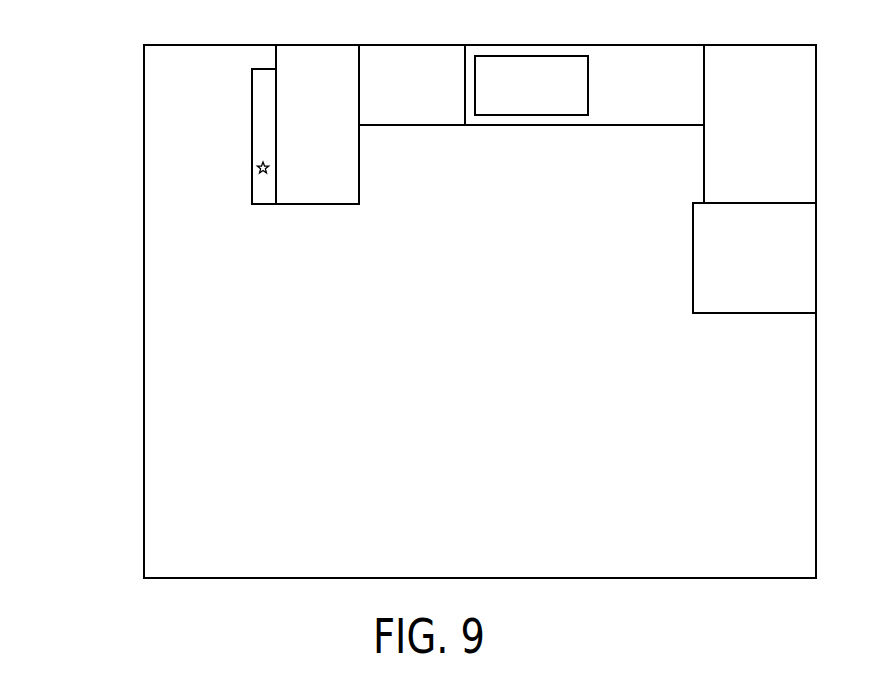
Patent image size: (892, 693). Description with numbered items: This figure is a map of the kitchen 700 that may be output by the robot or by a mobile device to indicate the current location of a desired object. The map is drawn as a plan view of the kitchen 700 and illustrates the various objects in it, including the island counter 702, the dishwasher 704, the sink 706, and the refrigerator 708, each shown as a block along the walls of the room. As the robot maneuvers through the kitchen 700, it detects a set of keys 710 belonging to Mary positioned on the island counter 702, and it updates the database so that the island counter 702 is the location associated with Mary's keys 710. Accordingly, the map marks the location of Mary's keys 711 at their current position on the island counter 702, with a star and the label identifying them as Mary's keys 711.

The kitchen 700 is at (101, 211).
The island counter 702 is at (263, 101).
The dishwasher 704 is at (421, 105).
The sink 706 is at (528, 115).
The refrigerator 708 is at (708, 258).
The keys 710 is at (262, 176).
The Mary's keys location 711 is at (212, 223).